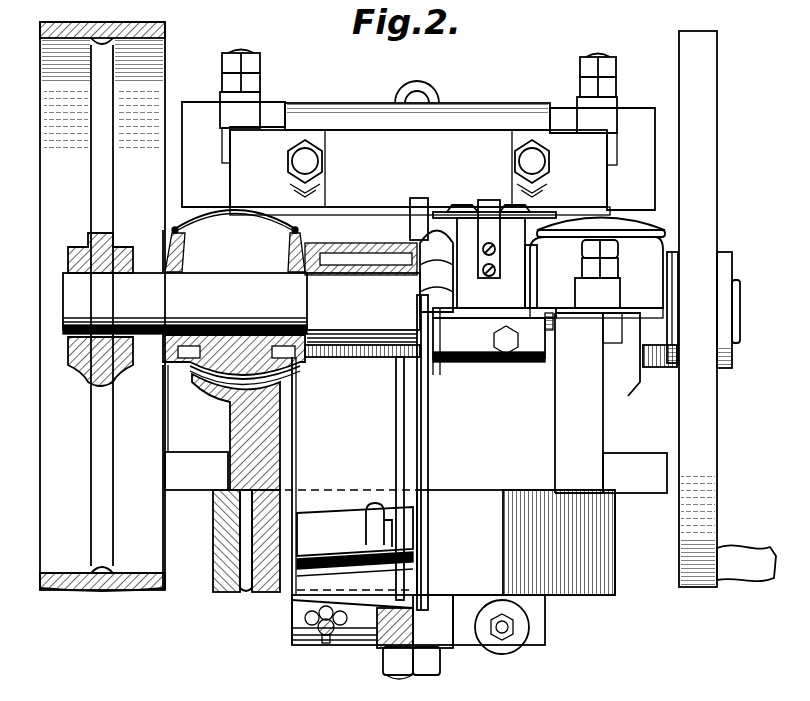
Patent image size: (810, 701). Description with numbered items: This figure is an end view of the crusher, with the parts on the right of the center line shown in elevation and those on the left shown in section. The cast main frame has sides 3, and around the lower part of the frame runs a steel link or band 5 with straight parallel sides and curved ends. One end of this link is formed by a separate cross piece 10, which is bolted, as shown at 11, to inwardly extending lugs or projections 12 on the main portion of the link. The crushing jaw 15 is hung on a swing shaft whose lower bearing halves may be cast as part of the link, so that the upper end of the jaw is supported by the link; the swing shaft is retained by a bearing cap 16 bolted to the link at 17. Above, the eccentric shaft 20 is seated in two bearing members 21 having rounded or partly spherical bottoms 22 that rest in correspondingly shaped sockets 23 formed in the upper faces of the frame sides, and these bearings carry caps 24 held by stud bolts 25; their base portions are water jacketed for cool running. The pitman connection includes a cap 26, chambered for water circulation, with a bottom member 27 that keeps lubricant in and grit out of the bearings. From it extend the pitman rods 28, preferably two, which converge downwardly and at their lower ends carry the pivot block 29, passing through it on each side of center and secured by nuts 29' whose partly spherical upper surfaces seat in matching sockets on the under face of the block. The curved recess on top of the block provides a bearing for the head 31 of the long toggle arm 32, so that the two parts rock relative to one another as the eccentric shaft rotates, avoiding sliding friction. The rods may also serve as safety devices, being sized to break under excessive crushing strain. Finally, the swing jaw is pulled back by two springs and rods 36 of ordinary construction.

The sides 3 is at (250, 462).
The steel link or band 5 is at (218, 572).
The cross piece 10 is at (420, 172).
The bolts 11 is at (313, 157).
The lugs or projections 12 is at (312, 192).
The crushing jaw 15 is at (362, 118).
The bearing cap 16 is at (272, 105).
The bolts 17 is at (229, 62).
The eccentric shaft 20 is at (309, 324).
The bearing members 21 is at (170, 368).
The rounded or partly spherical bottoms 22 is at (198, 374).
The sockets 23 is at (226, 380).
The caps 24 is at (186, 260).
The stud bolts 25 is at (606, 271).
The cap 26 is at (410, 243).
The bottom member 27 is at (362, 366).
The rods 28 is at (402, 416).
The pivot block 29 is at (371, 648).
The nuts 29' is at (429, 674).
The head 31 is at (405, 600).
The long toggle arm 32 is at (355, 529).
The springs and rods 36 is at (302, 645).